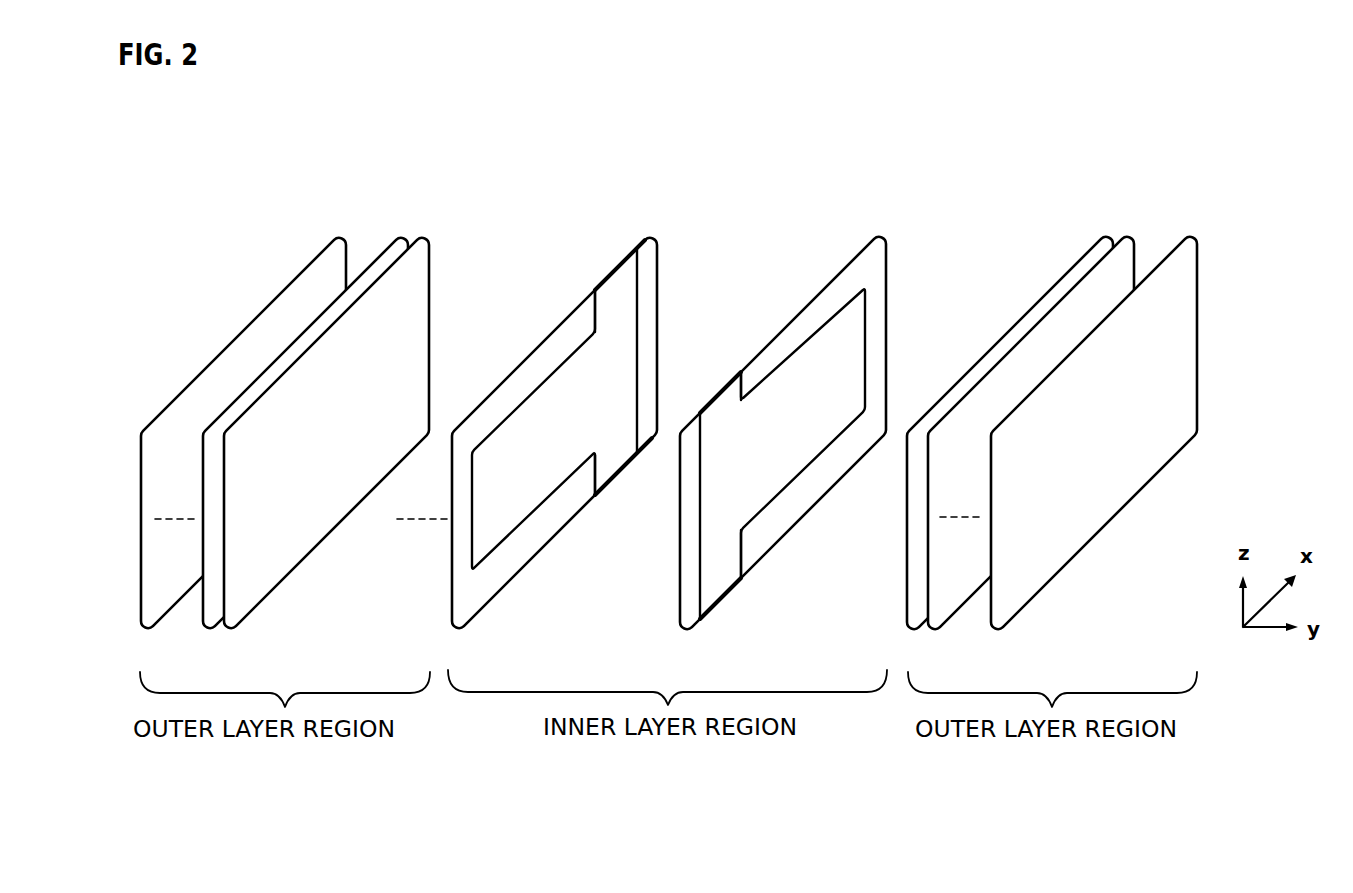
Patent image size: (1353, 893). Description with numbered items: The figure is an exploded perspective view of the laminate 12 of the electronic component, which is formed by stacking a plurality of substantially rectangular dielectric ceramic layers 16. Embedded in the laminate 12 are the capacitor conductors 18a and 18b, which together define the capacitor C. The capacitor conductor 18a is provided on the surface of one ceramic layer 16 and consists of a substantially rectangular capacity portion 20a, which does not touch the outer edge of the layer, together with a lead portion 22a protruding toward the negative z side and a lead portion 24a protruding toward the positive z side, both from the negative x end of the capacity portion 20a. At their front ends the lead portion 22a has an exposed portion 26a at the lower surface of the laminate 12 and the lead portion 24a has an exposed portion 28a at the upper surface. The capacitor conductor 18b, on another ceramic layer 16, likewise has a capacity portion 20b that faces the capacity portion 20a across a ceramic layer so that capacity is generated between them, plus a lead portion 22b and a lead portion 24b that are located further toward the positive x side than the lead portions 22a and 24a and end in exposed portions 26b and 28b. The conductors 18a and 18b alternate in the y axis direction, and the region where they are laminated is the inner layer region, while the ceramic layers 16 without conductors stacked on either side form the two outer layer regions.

The laminate 12 is at (210, 128).
The ceramic layer 16 is at (344, 236).
The capacitor C is at (714, 242).
The capacitor conductor 18a is at (806, 316).
The capacitor conductor 18b is at (548, 357).
The capacity portion 20a is at (851, 337).
The capacity portion 20b is at (508, 447).
The lead portion 22a is at (717, 573).
The lead portion 24a is at (719, 398).
The exposed portion 26a is at (729, 590).
The exposed portion 28a is at (731, 373).
The lead portion 22b is at (608, 462).
The lead portion 24b is at (611, 292).
The exposed portion 26b is at (626, 466).
The exposed portion 28b is at (622, 258).